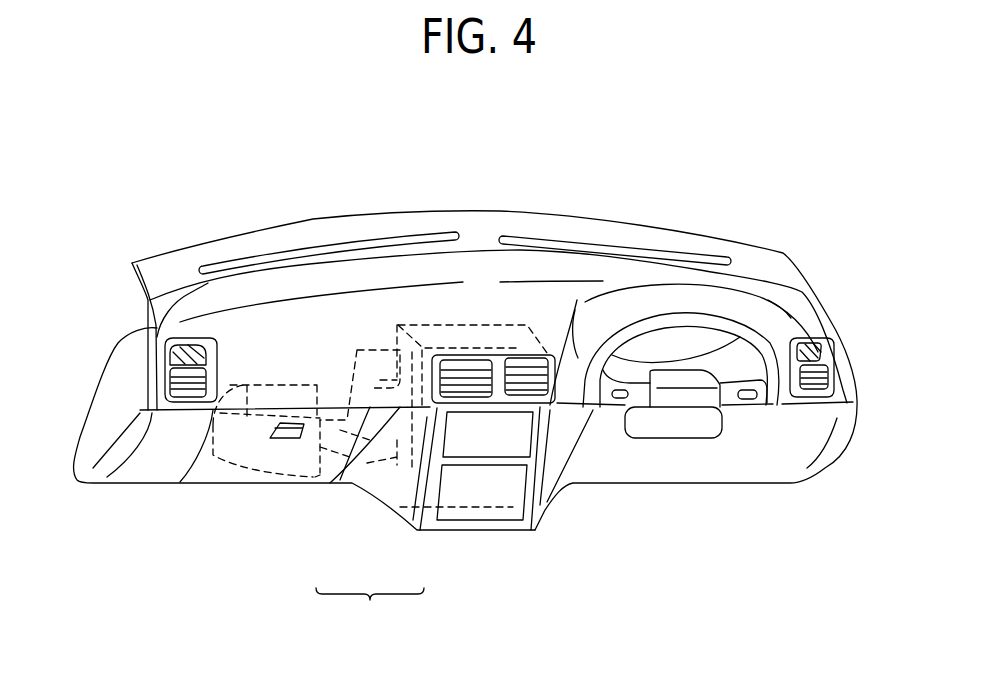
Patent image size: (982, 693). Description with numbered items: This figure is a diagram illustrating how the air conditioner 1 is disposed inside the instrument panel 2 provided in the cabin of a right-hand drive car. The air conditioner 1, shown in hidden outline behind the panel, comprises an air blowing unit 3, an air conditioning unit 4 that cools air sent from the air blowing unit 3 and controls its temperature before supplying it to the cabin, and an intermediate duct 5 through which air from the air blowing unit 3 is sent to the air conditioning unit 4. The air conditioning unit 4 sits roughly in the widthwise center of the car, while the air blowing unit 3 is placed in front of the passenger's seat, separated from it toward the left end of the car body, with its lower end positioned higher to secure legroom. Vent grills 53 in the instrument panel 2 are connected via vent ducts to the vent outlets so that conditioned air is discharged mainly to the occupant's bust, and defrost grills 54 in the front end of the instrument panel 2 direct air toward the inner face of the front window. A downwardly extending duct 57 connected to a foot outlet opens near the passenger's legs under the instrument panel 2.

The air conditioner 1 is at (370, 612).
The instrument panel 2 is at (571, 186).
The air blowing unit 3 is at (318, 478).
The air conditioning unit 4 is at (412, 470).
The intermediate duct 5 is at (372, 480).
The vent grill 53 is at (443, 380).
The defrost grill 54 is at (323, 258).
The duct 57 is at (372, 350).